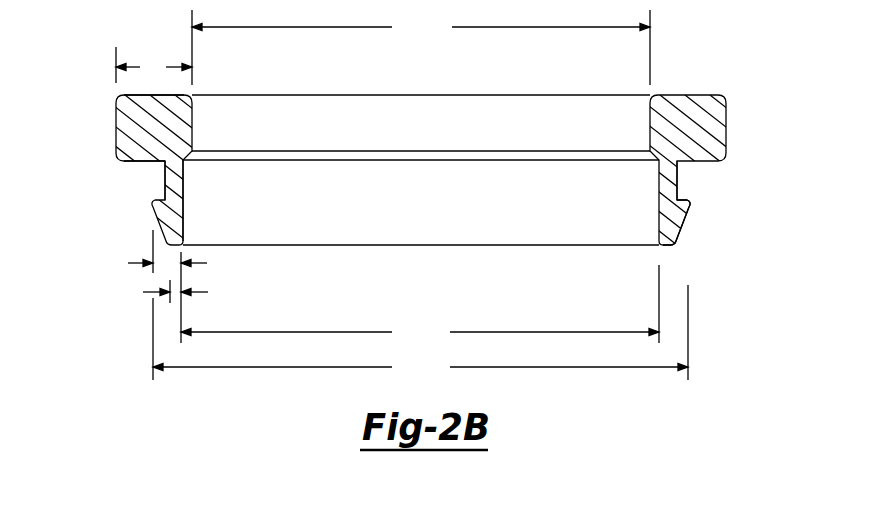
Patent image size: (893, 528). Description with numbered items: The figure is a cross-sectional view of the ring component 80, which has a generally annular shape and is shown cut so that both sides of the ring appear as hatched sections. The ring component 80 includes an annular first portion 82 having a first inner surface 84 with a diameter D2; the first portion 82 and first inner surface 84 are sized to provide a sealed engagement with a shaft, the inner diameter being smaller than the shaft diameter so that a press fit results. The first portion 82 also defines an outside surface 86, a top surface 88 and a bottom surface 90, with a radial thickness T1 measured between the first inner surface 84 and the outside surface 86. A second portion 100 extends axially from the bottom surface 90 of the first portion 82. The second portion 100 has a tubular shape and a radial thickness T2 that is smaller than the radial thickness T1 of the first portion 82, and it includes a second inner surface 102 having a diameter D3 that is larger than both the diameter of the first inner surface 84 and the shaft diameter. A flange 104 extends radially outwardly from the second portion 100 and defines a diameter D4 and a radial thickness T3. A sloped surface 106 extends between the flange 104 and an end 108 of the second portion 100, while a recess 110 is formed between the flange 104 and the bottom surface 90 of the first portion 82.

The ring component 80 is at (734, 49).
The first portion 82 is at (699, 113).
The first inner surface 84 is at (272, 113).
The outside surface 86 is at (116, 130).
The top surface 88 is at (140, 96).
The bottom surface 90 is at (142, 163).
The second portion 100 is at (176, 183).
The second inner surface 102 is at (402, 231).
The flange 104 is at (686, 206).
The sloped surface 106 is at (682, 226).
The end 108 is at (664, 250).
The recess 110 is at (677, 183).